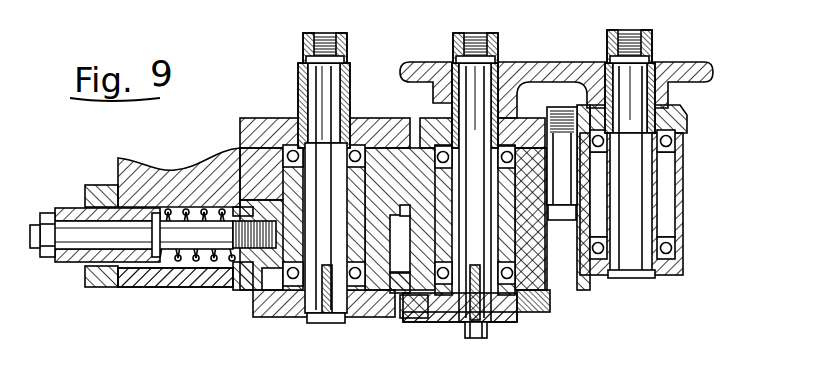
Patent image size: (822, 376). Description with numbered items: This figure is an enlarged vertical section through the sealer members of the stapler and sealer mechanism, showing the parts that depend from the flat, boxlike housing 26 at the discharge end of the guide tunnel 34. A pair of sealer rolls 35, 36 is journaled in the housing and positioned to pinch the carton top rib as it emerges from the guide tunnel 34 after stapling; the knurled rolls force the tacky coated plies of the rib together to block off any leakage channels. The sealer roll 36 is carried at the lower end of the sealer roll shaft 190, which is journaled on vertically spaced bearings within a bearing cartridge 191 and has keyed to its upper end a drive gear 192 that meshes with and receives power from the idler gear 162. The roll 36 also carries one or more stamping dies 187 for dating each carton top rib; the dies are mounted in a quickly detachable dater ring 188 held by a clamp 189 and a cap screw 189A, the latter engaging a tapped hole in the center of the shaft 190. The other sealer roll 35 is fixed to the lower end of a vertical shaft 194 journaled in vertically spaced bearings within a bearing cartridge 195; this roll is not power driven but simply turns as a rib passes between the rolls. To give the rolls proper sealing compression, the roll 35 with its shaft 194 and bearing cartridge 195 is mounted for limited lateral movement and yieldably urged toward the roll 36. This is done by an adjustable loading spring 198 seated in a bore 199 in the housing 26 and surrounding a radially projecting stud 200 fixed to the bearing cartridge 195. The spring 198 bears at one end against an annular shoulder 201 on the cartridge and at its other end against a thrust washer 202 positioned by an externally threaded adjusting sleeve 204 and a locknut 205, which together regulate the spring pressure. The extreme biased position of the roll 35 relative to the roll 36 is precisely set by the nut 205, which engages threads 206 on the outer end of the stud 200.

The housing 26 is at (170, 168).
The guide tunnel 34 is at (402, 274).
The sealer roll 35 is at (265, 317).
The sealer roll 36 is at (515, 322).
The idler gear 162 is at (690, 62).
The stamping dies 187 is at (548, 305).
The dater ring 188 is at (403, 318).
The clamp 189 is at (410, 323).
The cap screw 189A is at (475, 338).
The sealer roll shaft 190 is at (462, 36).
The bearing cartridge 191 is at (533, 258).
The drive gear 192 is at (521, 62).
The vertical shaft 194 is at (313, 36).
The bearing cartridge 195 is at (253, 290).
The loading spring 198 is at (182, 262).
The bore 199 is at (212, 268).
The stud 200 is at (72, 249).
The annular shoulder 201 is at (233, 265).
The thrust washer 202 is at (158, 262).
The adjusting sleeve 204 is at (75, 208).
The locknut 205 is at (95, 185).
The threads 206 is at (40, 213).